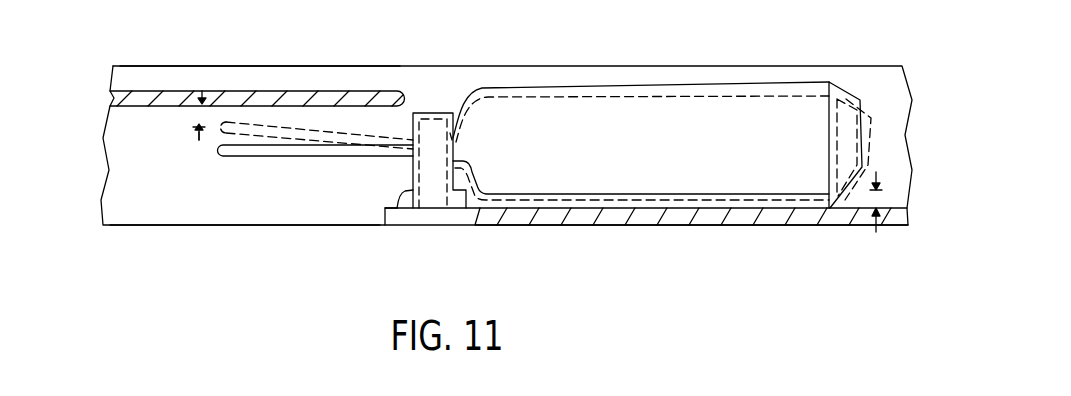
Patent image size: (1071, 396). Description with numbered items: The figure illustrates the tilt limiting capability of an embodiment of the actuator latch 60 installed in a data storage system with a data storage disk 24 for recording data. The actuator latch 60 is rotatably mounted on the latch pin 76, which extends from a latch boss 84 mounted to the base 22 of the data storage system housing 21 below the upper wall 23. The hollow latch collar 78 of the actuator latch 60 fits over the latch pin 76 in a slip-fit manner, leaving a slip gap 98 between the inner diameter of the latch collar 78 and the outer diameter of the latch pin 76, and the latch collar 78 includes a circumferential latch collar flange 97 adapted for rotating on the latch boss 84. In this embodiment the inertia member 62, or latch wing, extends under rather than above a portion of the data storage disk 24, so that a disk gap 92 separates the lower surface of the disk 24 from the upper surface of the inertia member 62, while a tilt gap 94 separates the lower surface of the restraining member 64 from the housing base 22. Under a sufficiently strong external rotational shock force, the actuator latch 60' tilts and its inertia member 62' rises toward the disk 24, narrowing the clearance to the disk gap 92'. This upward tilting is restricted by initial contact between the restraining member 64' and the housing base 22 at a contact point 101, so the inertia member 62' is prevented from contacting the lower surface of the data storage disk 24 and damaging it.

The data storage system housing 21 is at (104, 84).
The base 22 is at (265, 228).
The upper wall 23 is at (146, 70).
The data storage disk 24 is at (257, 98).
The actuator latch 60 is at (641, 109).
The tilted actuator latch 60' is at (642, 112).
The inertia member 62 is at (316, 173).
The tilted inertia member 62' is at (309, 161).
The restraining member 64 is at (815, 116).
The tilted restraining member 64' is at (777, 112).
The latch pin 76 is at (423, 192).
The latch collar 78 is at (434, 114).
The latch boss 84 is at (393, 224).
The disk gap 92 is at (158, 154).
The disk gap in tilted condition 92' is at (161, 131).
The tilt gap 94 is at (888, 199).
The latch collar flange 97 is at (398, 194).
The slip gap 98 is at (456, 126).
The contact point 101 is at (828, 228).